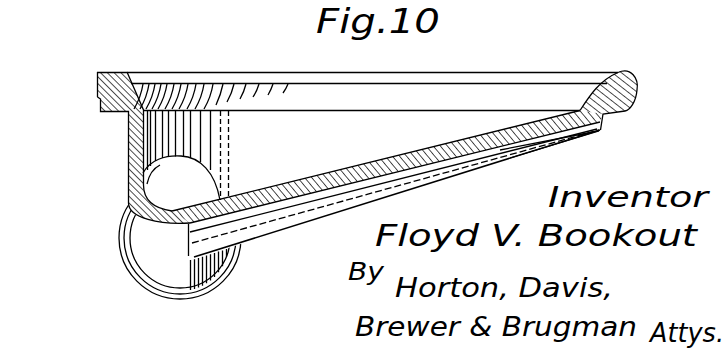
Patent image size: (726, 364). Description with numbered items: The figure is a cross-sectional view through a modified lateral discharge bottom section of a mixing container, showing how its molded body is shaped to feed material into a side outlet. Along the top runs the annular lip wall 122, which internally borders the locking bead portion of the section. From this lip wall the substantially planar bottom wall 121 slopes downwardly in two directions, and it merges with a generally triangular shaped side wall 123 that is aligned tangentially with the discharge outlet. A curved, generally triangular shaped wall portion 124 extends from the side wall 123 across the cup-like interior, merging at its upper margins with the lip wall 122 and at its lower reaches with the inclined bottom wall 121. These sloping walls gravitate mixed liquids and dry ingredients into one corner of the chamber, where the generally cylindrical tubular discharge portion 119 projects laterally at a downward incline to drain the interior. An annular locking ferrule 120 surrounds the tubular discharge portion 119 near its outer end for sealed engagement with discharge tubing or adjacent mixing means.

The curved triangular wall portion 124 is at (258, 128).
The annular lip wall 122 is at (580, 108).
The side wall 123 is at (135, 152).
The bottom wall 121 is at (355, 173).
The locking ferrule 120 is at (213, 288).
The tubular discharge portion 119 is at (152, 254).